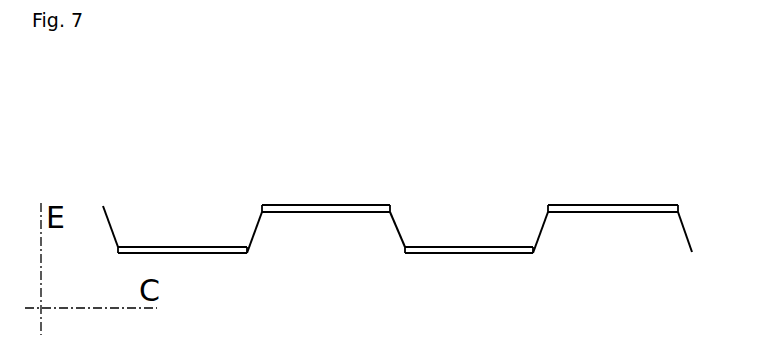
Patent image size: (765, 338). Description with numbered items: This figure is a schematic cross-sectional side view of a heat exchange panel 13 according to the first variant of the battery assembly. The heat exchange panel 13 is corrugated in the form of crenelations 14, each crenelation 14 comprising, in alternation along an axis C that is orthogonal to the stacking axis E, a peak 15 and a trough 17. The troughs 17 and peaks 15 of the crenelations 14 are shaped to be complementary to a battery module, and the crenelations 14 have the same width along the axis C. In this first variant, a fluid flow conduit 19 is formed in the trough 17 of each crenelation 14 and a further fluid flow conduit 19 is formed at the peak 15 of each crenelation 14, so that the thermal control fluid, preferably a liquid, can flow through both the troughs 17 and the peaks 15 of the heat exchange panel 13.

The heat exchange panel 13 is at (172, 122).
The crenelation 14 is at (258, 125).
The trough 17 is at (182, 247).
The peak 15 is at (320, 210).
The fluid flow conduit 19 is at (217, 253).